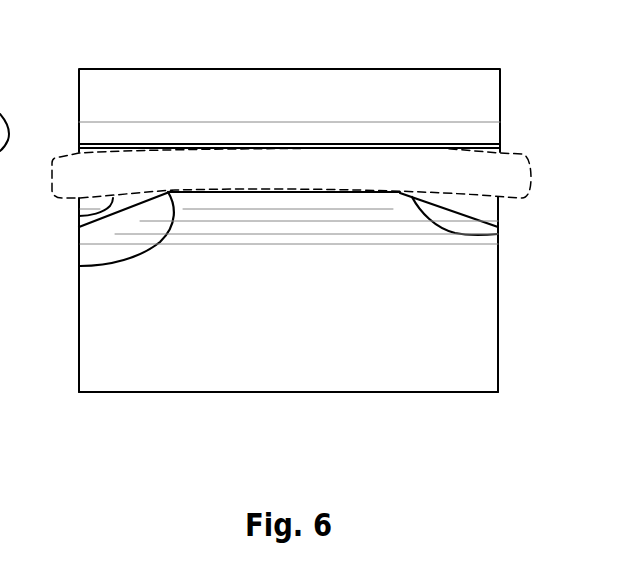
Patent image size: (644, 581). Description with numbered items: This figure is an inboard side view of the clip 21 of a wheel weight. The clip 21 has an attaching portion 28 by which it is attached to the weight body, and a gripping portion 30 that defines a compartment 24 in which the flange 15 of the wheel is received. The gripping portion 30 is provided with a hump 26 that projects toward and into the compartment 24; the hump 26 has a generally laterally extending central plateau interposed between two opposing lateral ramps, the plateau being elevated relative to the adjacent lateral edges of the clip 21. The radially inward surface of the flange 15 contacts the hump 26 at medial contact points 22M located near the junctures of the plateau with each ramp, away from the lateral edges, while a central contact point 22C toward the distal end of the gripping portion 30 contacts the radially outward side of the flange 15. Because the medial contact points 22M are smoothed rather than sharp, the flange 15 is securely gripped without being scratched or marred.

The gripping portion 30 is at (384, 101).
The central contact point 22C is at (288, 144).
The flange 15 is at (497, 175).
The attaching portion 28 is at (356, 356).
The clip 21 is at (275, 430).
The compartment 24 is at (80, 216).
The medial contact points 22M is at (82, 265).
The hump 26 is at (281, 200).